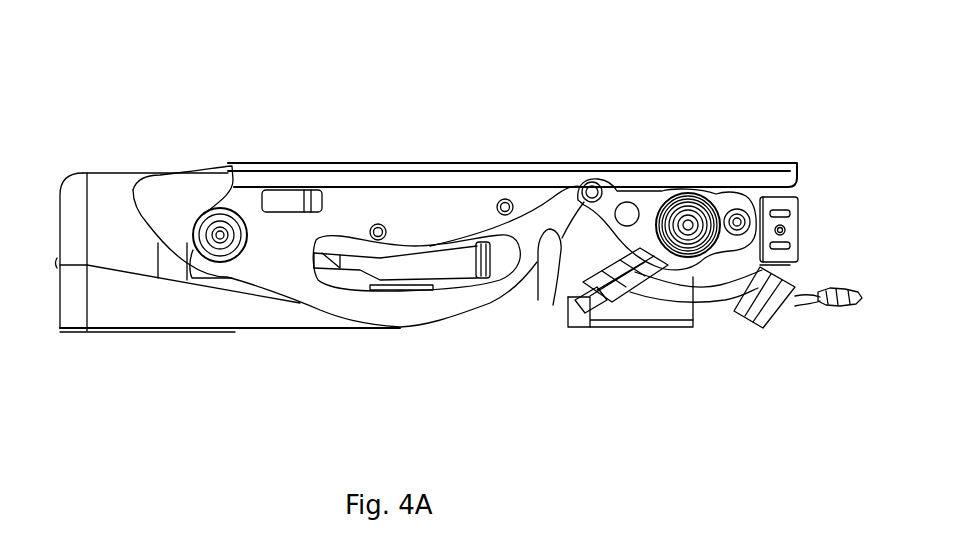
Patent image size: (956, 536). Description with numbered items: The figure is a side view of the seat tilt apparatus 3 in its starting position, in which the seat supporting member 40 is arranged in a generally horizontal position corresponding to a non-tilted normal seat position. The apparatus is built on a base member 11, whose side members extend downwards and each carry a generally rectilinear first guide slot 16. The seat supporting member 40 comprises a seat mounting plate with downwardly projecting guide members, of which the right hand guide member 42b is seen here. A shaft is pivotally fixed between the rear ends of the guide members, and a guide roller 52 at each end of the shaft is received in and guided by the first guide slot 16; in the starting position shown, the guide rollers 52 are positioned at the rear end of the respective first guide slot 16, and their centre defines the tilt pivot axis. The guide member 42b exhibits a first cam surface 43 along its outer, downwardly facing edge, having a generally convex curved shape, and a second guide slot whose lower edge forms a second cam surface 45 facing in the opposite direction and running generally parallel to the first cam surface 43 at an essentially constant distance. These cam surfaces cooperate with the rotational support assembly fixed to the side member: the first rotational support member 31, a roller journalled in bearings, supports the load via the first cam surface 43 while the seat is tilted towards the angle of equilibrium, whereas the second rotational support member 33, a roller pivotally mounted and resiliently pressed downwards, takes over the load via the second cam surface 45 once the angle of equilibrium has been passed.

The seat tilt apparatus 3 is at (118, 63).
The base member 11 is at (296, 331).
The first guide slot 16 is at (380, 263).
The first rotational support member 31 is at (705, 193).
The second rotational support member 33 is at (578, 192).
The seat supporting member 40 is at (405, 163).
The right hand guide member 42b is at (273, 273).
The first cam surface 43 is at (624, 322).
The second cam surface 45 is at (553, 305).
The guide roller 52 is at (200, 213).